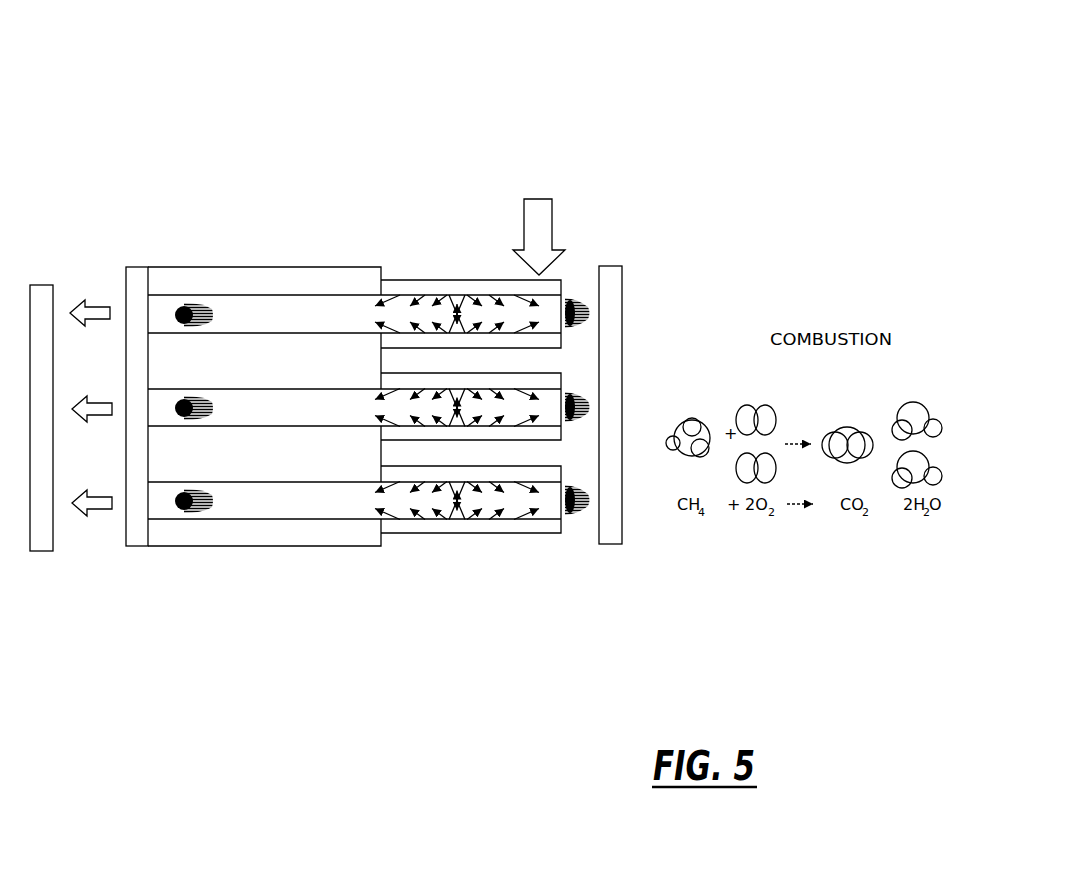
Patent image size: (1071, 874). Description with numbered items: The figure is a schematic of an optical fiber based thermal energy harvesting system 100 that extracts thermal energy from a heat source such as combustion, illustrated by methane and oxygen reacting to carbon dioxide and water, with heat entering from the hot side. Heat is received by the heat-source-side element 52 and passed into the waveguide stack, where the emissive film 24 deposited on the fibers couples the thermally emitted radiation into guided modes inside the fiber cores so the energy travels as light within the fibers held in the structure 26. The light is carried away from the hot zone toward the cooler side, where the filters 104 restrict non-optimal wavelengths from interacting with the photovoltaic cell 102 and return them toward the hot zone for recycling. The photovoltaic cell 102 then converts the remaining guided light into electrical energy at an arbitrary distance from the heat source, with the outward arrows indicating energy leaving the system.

The optical fiber based thermal energy harvesting system 100 is at (450, 61).
The photovoltaic cell 102 is at (40, 284).
The filters 104 is at (138, 282).
The housing block 26 is at (303, 313).
The emissive film 24 is at (413, 280).
The hot plate 52 is at (619, 259).